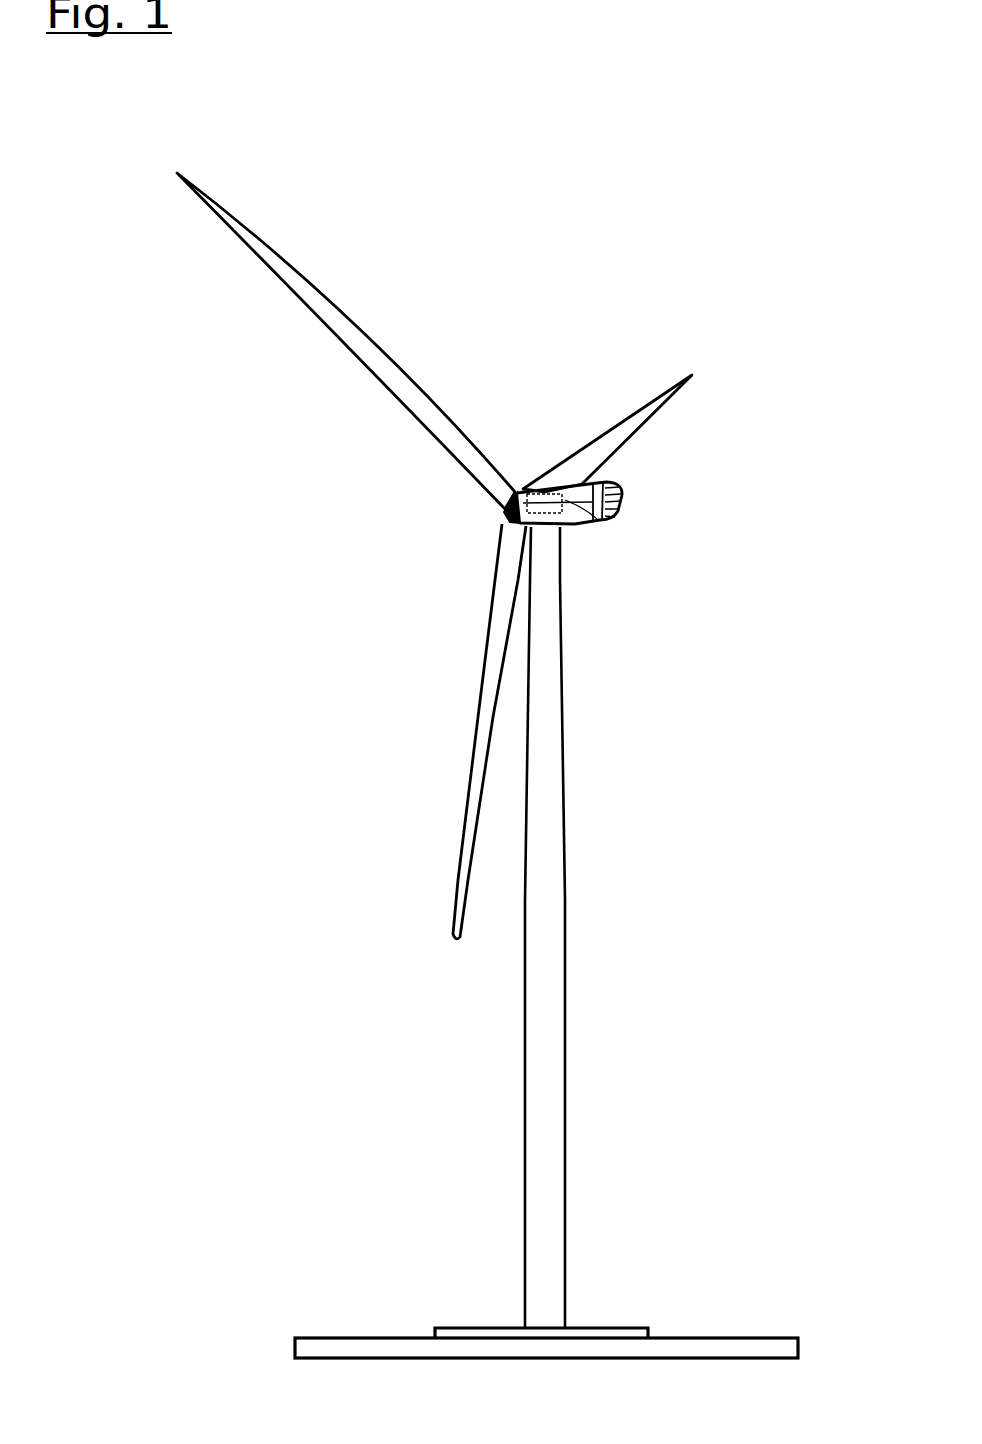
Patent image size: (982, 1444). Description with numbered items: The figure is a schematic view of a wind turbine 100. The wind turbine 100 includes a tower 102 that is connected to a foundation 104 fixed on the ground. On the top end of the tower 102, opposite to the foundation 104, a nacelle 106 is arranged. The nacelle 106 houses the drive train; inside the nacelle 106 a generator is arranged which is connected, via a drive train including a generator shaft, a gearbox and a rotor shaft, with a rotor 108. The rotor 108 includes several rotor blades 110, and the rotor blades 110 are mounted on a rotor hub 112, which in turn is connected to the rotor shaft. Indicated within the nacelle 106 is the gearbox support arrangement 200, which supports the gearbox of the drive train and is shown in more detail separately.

The wind turbine 100 is at (653, 805).
The tower 102 is at (545, 1023).
The foundation 104 is at (655, 1347).
The nacelle 106 is at (585, 532).
The rotor 108 is at (425, 556).
The rotor blades 110 is at (380, 385).
The rotor hub 112 is at (502, 522).
The gearbox support arrangement 200 is at (537, 487).